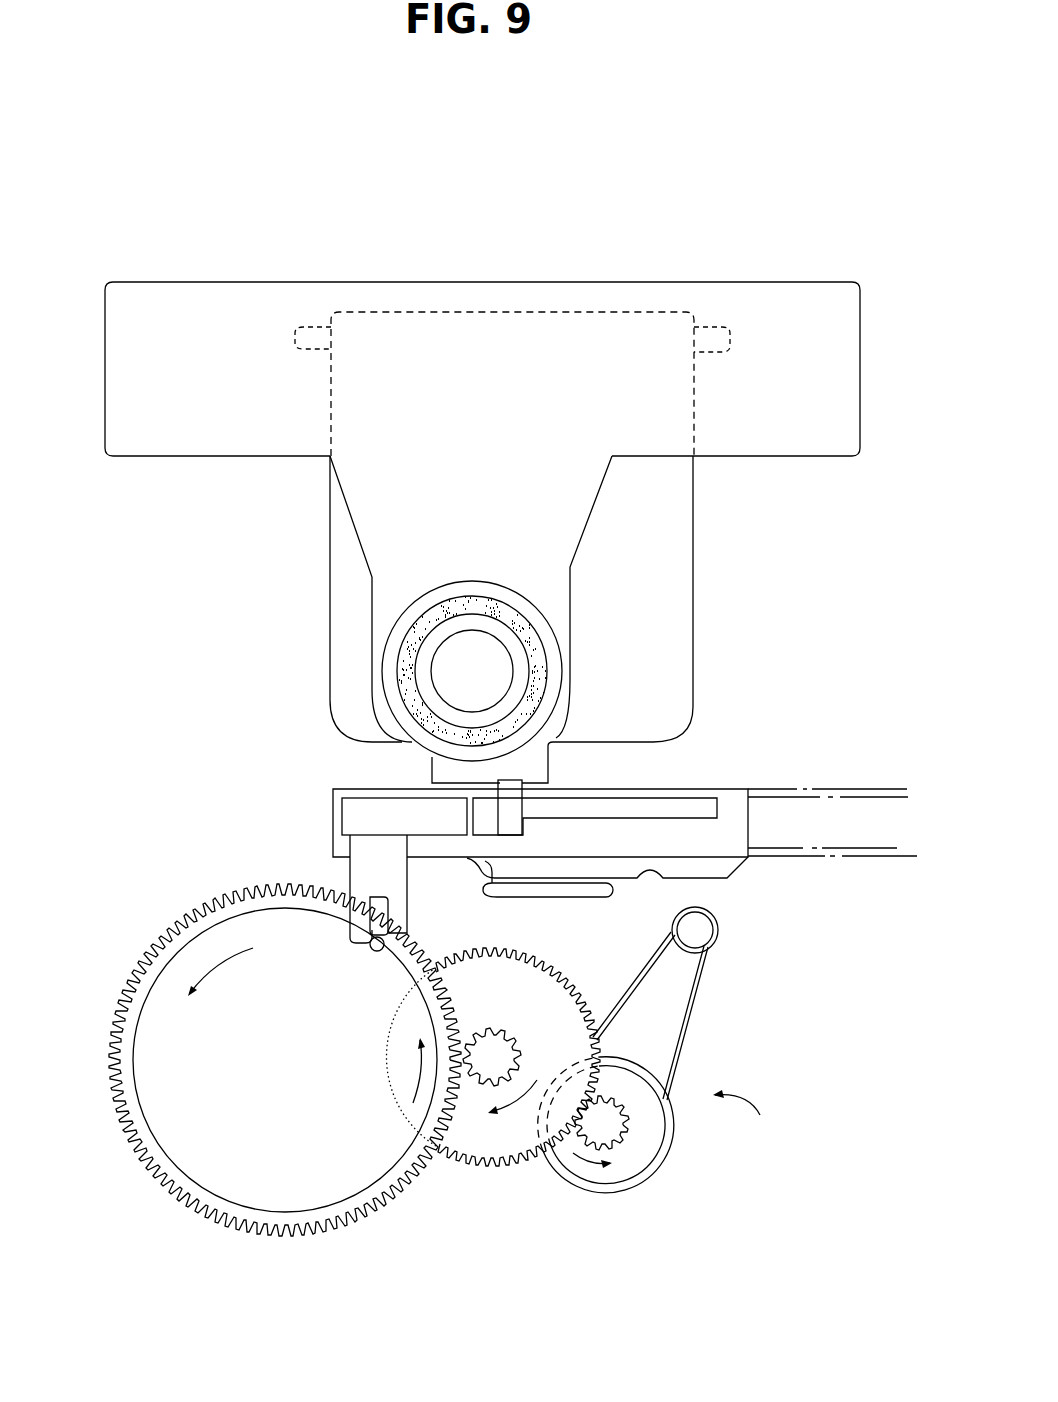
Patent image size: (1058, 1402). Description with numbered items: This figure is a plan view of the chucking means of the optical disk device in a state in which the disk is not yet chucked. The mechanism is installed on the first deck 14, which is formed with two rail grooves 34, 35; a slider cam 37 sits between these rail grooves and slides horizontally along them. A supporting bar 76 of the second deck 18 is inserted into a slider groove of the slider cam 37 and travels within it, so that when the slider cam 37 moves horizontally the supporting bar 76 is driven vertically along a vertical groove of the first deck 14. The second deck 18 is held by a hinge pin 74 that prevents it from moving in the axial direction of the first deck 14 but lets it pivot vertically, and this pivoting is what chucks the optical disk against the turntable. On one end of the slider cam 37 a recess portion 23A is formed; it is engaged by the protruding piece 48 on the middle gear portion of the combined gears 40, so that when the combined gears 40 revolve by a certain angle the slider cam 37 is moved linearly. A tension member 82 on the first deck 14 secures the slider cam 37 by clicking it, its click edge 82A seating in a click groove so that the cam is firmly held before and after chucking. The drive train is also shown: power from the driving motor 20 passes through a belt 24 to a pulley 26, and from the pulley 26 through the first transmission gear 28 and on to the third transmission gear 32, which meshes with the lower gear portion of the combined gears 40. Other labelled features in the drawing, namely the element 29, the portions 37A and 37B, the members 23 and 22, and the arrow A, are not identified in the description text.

The first deck 14 is at (842, 400).
The second deck 18 is at (672, 520).
The bearing 29 is at (410, 605).
The hinge pin 74 is at (705, 327).
The supporting bar 76 is at (513, 812).
The slider cam 37 is at (748, 824).
The projection 37A is at (467, 872).
The projection 37B is at (653, 880).
The rail groove 34 is at (860, 789).
The rail groove 35 is at (860, 857).
The lever 23 is at (401, 875).
The recess portion 23A is at (373, 898).
The tension member 82 is at (573, 893).
The click edge 82A is at (487, 885).
The protruding piece 48 is at (373, 950).
The combined gears 40 is at (393, 1198).
The intermediate gear 22 is at (597, 993).
The third transmission gear 32 is at (477, 1087).
The first transmission gear 28 is at (630, 1140).
The pulley 26 is at (668, 1138).
The driving motor 20 is at (705, 930).
The belt 24 is at (680, 1047).
The swing direction A is at (767, 1125).